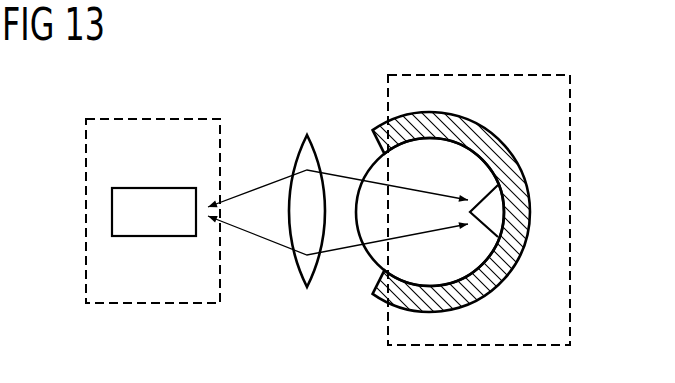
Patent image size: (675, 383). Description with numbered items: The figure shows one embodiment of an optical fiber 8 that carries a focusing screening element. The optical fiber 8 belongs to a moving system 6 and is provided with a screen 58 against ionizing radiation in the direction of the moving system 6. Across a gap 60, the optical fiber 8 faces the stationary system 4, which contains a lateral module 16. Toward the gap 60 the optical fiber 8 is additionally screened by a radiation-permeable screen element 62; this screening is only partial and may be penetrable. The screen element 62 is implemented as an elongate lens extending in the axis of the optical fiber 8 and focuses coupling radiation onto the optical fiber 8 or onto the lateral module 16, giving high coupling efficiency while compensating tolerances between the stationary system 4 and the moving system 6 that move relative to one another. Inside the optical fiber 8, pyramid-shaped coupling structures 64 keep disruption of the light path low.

The stationary system 4 is at (157, 119).
The moving system 6 is at (570, 95).
The optical fiber 8 is at (370, 260).
The lateral module 16 is at (112, 212).
The screen 58 is at (515, 168).
The gap 60 is at (340, 142).
The screen element 62 is at (300, 270).
The coupling structures 64 is at (495, 217).